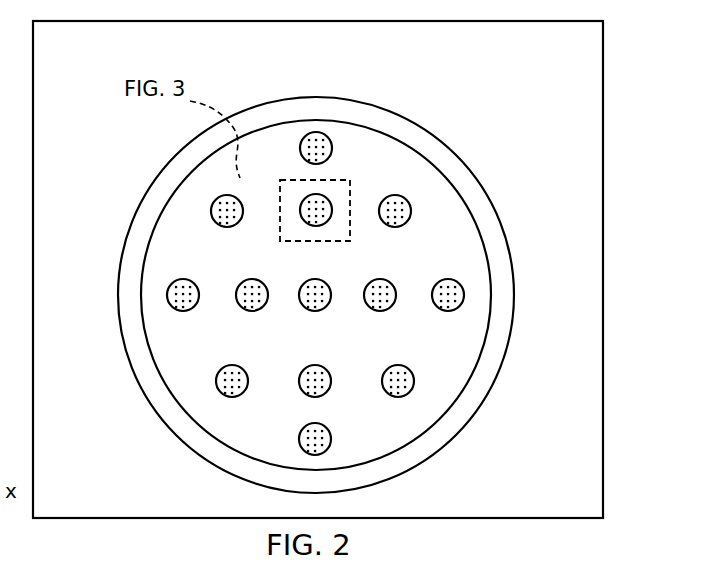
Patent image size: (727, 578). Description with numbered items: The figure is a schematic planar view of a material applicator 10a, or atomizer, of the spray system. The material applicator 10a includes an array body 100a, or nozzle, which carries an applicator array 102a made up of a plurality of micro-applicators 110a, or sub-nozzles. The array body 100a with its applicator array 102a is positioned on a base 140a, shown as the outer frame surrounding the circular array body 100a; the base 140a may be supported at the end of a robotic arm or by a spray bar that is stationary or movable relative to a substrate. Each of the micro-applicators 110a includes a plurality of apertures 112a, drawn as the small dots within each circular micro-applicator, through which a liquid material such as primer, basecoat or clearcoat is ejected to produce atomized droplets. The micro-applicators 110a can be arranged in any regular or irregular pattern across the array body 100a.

The material applicator 10a is at (565, 148).
The array body 100a is at (317, 273).
The applicator array 102a is at (175, 236).
The base 140a is at (510, 240).
The micro-applicators 110a is at (197, 282).
The apertures 112a is at (230, 375).